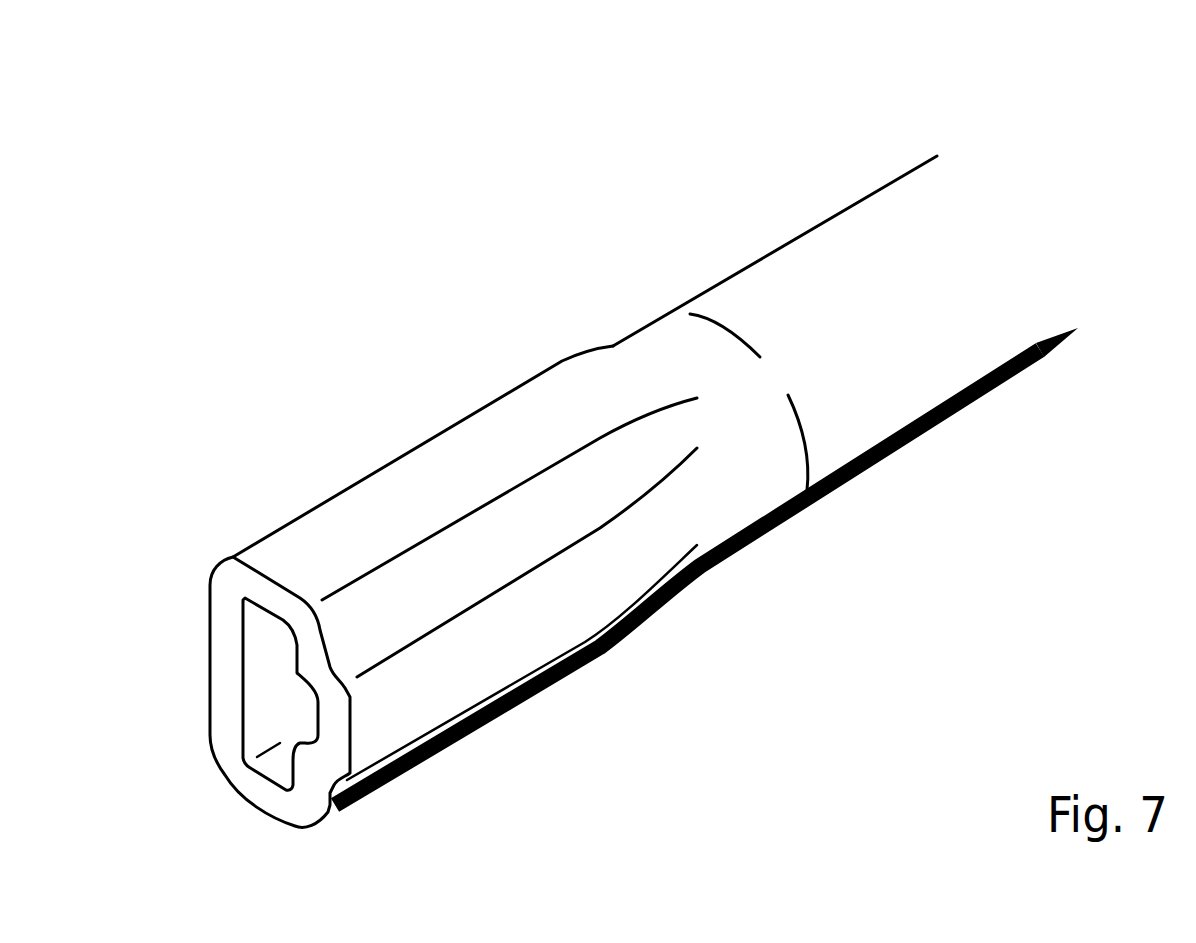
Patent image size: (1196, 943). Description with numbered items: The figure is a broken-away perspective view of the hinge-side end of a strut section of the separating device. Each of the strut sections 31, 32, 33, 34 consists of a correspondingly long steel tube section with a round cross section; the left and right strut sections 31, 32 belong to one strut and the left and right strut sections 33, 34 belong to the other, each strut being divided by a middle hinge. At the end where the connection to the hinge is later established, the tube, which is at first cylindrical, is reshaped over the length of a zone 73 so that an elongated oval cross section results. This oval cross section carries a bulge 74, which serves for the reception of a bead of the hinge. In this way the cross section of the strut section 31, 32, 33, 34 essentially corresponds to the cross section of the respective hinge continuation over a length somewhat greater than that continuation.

The left strut section 31 is at (750, 428).
The right strut section 32 is at (750, 428).
The left strut section 33 is at (750, 428).
The right strut section 34 is at (893, 180).
The zone 73 is at (390, 462).
The bulge 74 is at (315, 712).